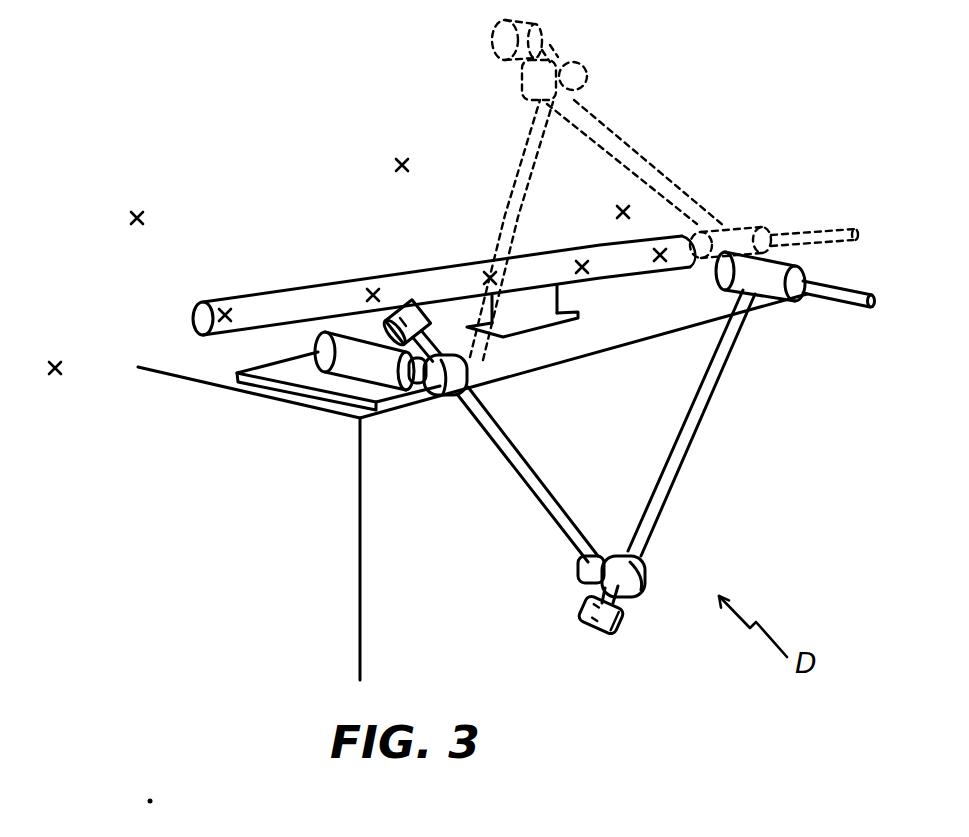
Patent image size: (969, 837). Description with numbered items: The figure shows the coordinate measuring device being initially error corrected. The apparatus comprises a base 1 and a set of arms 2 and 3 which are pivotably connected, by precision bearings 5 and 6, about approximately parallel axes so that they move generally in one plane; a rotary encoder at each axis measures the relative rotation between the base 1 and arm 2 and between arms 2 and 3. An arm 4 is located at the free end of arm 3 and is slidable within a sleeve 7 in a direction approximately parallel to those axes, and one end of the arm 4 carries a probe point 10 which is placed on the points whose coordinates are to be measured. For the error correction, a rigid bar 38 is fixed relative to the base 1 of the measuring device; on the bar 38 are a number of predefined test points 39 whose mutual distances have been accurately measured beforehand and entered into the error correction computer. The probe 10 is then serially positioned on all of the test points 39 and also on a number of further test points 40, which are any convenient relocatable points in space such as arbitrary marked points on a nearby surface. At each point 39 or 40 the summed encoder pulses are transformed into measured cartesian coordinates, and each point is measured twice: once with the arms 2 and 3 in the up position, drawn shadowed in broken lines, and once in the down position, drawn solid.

The base 1 is at (343, 346).
The arm 2 is at (520, 478).
The arm 3 is at (672, 468).
The arm 4 is at (840, 288).
The precision bearing 5 is at (457, 397).
The precision bearing 6 is at (645, 595).
The sleeve 7 is at (775, 260).
The probe point 10 is at (674, 254).
The rigid bar 38 is at (270, 296).
The predefined test points 39 is at (246, 314).
The further test points 40 is at (375, 165).